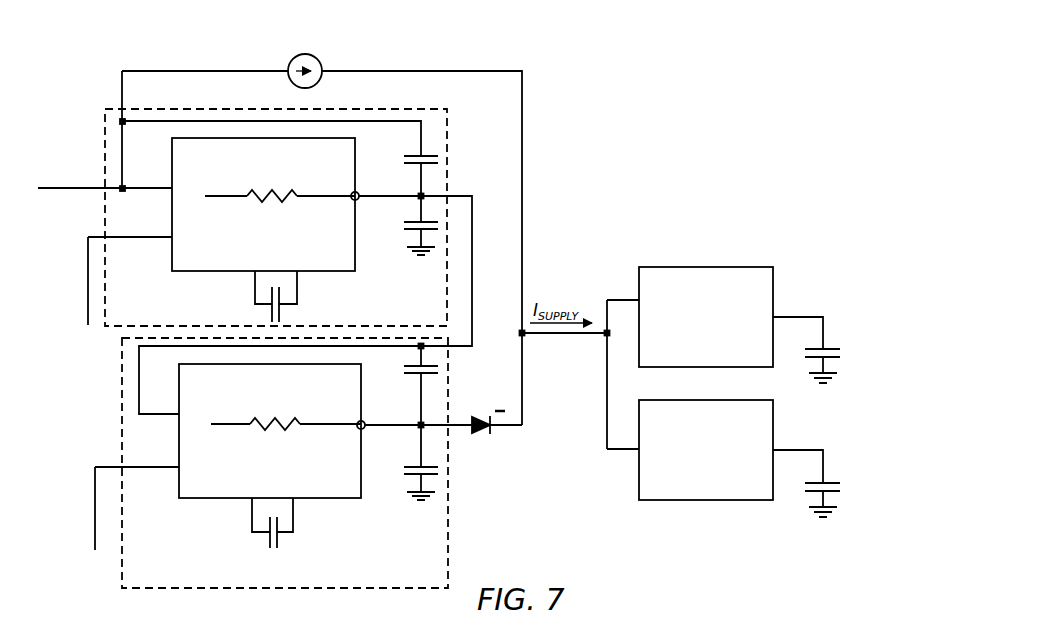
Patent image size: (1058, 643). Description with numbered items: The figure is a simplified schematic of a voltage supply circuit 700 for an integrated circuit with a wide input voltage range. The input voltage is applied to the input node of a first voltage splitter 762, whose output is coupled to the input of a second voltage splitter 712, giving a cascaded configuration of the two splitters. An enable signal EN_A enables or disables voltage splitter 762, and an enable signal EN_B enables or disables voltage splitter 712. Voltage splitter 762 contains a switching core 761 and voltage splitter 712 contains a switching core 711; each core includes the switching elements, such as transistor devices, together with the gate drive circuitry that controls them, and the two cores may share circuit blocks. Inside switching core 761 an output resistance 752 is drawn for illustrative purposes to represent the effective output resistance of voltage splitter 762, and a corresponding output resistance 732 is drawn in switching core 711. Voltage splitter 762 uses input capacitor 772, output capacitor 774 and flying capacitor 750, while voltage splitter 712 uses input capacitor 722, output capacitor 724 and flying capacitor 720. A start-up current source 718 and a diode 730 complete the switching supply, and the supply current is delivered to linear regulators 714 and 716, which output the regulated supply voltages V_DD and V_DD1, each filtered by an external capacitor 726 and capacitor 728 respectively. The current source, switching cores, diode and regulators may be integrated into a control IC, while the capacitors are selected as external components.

The voltage supply circuit 700 is at (645, 138).
The switching core 711 is at (270, 431).
The voltage splitter (UVS) 712 is at (327, 463).
The linear regulator 714 is at (706, 317).
The linear regulator 716 is at (706, 450).
The start-up current source 718 is at (291, 82).
The capacitor 720 is at (279, 544).
The capacitor 722 is at (430, 366).
The capacitor 724 is at (437, 476).
The capacitor 726 is at (829, 348).
The capacitor 728 is at (829, 483).
The diode 730 is at (480, 433).
The output resistance (R_OB) 732 is at (262, 430).
The flying capacitor 750 is at (281, 313).
The effective output resistance (R_OA) 752 is at (257, 202).
The switching core 761 is at (265, 204).
The voltage splitter (UVS) 762 is at (288, 261).
The input capacitor 772 is at (430, 155).
The output capacitor 774 is at (430, 221).